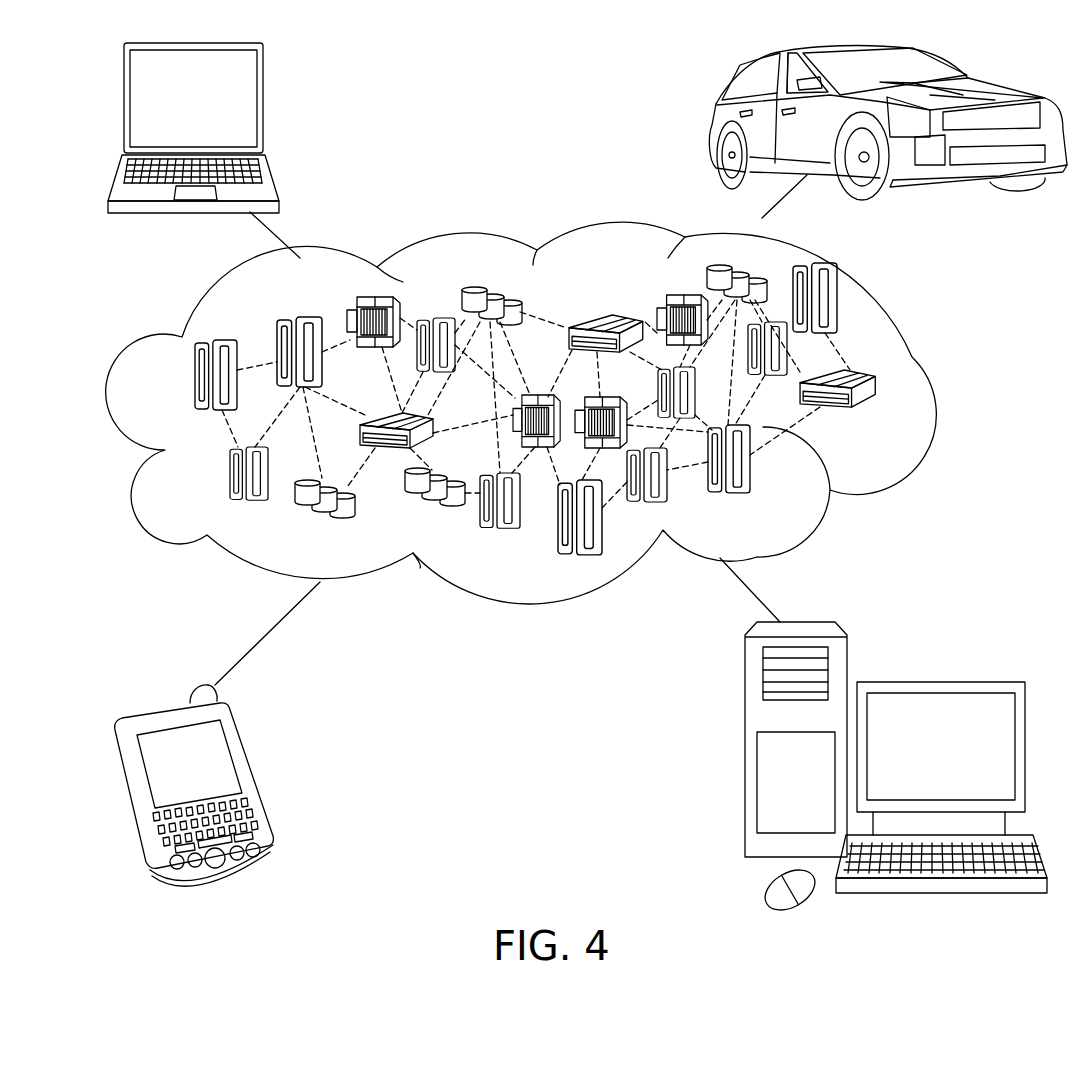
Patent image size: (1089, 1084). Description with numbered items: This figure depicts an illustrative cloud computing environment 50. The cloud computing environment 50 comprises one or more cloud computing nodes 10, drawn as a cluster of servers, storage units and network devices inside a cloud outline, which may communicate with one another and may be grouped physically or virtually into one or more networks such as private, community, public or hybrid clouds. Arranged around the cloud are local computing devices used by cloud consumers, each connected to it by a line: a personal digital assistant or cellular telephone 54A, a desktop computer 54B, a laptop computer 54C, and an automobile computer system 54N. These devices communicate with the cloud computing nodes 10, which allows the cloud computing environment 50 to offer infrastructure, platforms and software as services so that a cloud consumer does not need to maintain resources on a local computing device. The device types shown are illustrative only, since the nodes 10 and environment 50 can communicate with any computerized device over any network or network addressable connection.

The cloud computing node 10 is at (878, 417).
The cloud computing environment 50 is at (938, 387).
The personal digital assistant or cellular telephone 54A is at (252, 777).
The desktop computer 54B is at (937, 681).
The laptop computer 54C is at (265, 108).
The automobile computer system 54N is at (712, 122).